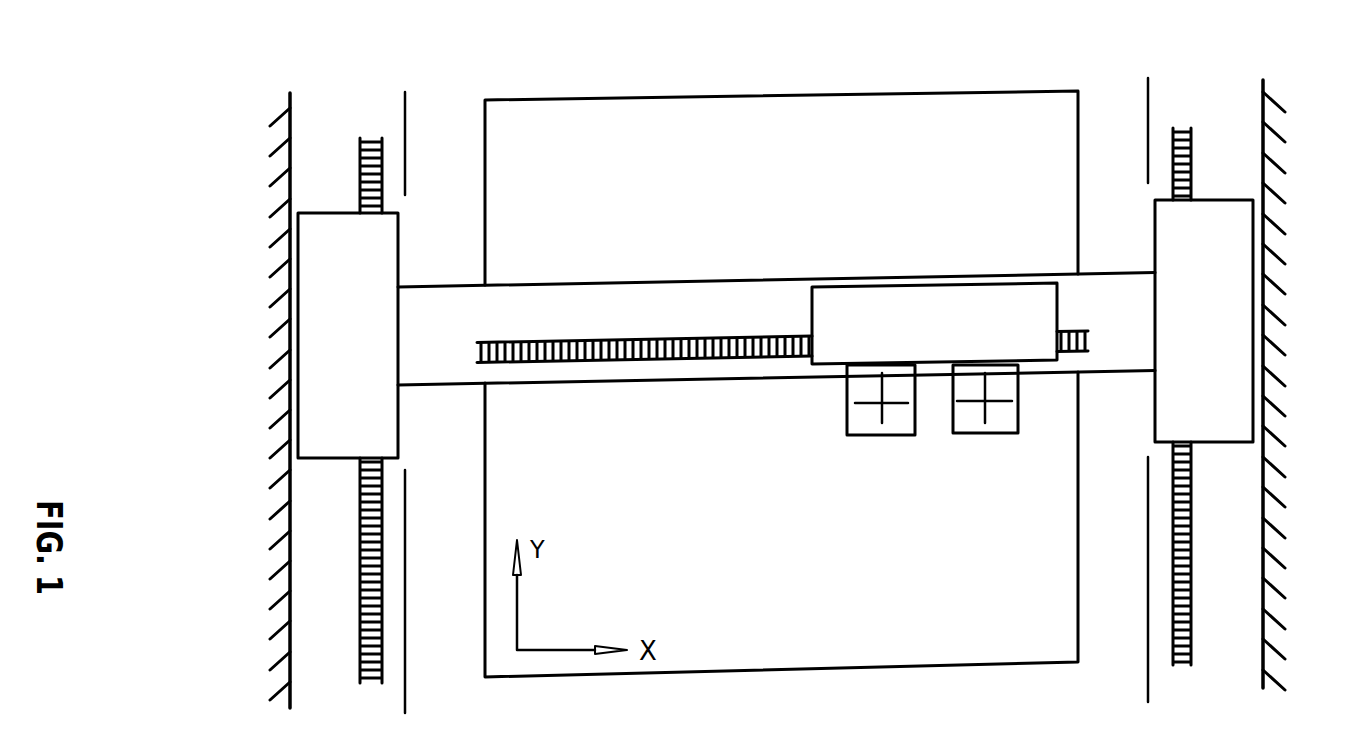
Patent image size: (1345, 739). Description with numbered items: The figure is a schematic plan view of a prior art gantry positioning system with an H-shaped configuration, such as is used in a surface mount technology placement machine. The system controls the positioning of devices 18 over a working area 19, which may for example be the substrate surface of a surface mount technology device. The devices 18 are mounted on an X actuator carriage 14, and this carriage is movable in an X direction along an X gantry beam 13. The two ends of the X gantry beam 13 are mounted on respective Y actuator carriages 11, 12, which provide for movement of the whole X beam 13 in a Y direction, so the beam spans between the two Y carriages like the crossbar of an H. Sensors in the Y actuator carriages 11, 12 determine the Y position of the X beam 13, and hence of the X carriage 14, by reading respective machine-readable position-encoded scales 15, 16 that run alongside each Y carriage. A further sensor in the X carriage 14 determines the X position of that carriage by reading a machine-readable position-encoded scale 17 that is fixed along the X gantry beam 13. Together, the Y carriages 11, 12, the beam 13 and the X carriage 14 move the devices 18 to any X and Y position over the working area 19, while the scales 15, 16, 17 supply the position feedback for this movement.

The Y actuator carriage 11 is at (332, 398).
The Y actuator carriage 12 is at (1228, 382).
The X gantry beam 13 is at (722, 305).
The X actuator carriage 14 is at (865, 323).
The machine-readable position-encoded scale 15 is at (369, 138).
The machine-readable position-encoded scale 16 is at (1181, 128).
The machine-readable position-encoded scale 17 is at (688, 357).
The devices 18 is at (887, 412).
The working area 19 is at (648, 165).